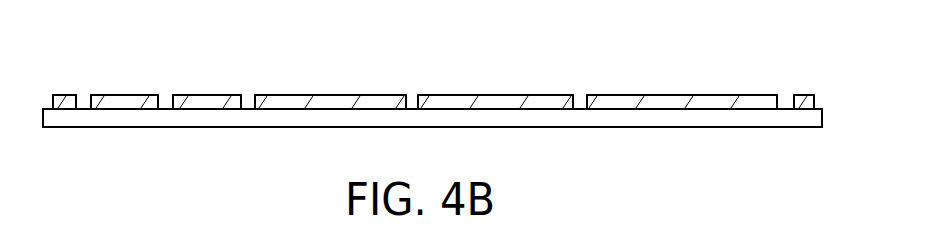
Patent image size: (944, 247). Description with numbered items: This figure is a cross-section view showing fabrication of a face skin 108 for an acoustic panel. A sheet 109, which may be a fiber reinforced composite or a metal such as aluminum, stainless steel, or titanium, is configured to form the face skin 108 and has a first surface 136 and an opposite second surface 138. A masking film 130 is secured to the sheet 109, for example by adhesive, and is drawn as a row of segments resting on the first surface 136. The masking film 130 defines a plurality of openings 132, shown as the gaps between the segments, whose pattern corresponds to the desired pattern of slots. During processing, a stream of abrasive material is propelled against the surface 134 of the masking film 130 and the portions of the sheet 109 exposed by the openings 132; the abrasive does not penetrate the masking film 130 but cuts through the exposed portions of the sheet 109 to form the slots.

The face skin 108 is at (831, 100).
The sheet 109 is at (808, 118).
The masking film 130 is at (668, 102).
The openings 132 is at (87, 85).
The surface of masking film 134 is at (341, 95).
The first surface 136 is at (742, 110).
The second surface 138 is at (738, 130).